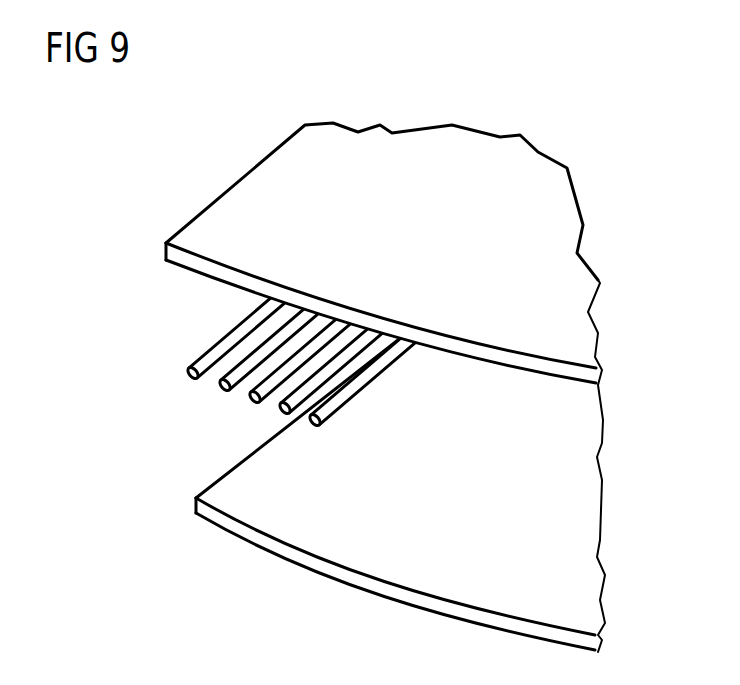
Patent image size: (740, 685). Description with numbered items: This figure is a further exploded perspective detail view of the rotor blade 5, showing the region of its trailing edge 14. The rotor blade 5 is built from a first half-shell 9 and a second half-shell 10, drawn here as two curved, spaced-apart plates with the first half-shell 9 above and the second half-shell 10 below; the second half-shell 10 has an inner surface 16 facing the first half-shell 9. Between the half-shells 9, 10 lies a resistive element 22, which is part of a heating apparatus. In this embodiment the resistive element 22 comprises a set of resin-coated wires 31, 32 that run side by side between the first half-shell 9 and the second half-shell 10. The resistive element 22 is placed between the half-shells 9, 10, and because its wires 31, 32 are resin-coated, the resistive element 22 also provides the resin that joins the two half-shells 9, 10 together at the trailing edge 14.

The rotor blade 5 is at (116, 152).
The first half-shell 9 is at (480, 143).
The second half-shell 10 is at (324, 585).
The trailing edge 14 is at (350, 368).
The inner surface 16 is at (587, 491).
The resistive element 22 is at (272, 344).
The resin-coated wire 31 is at (208, 352).
The resin-coated wire 32 is at (222, 378).